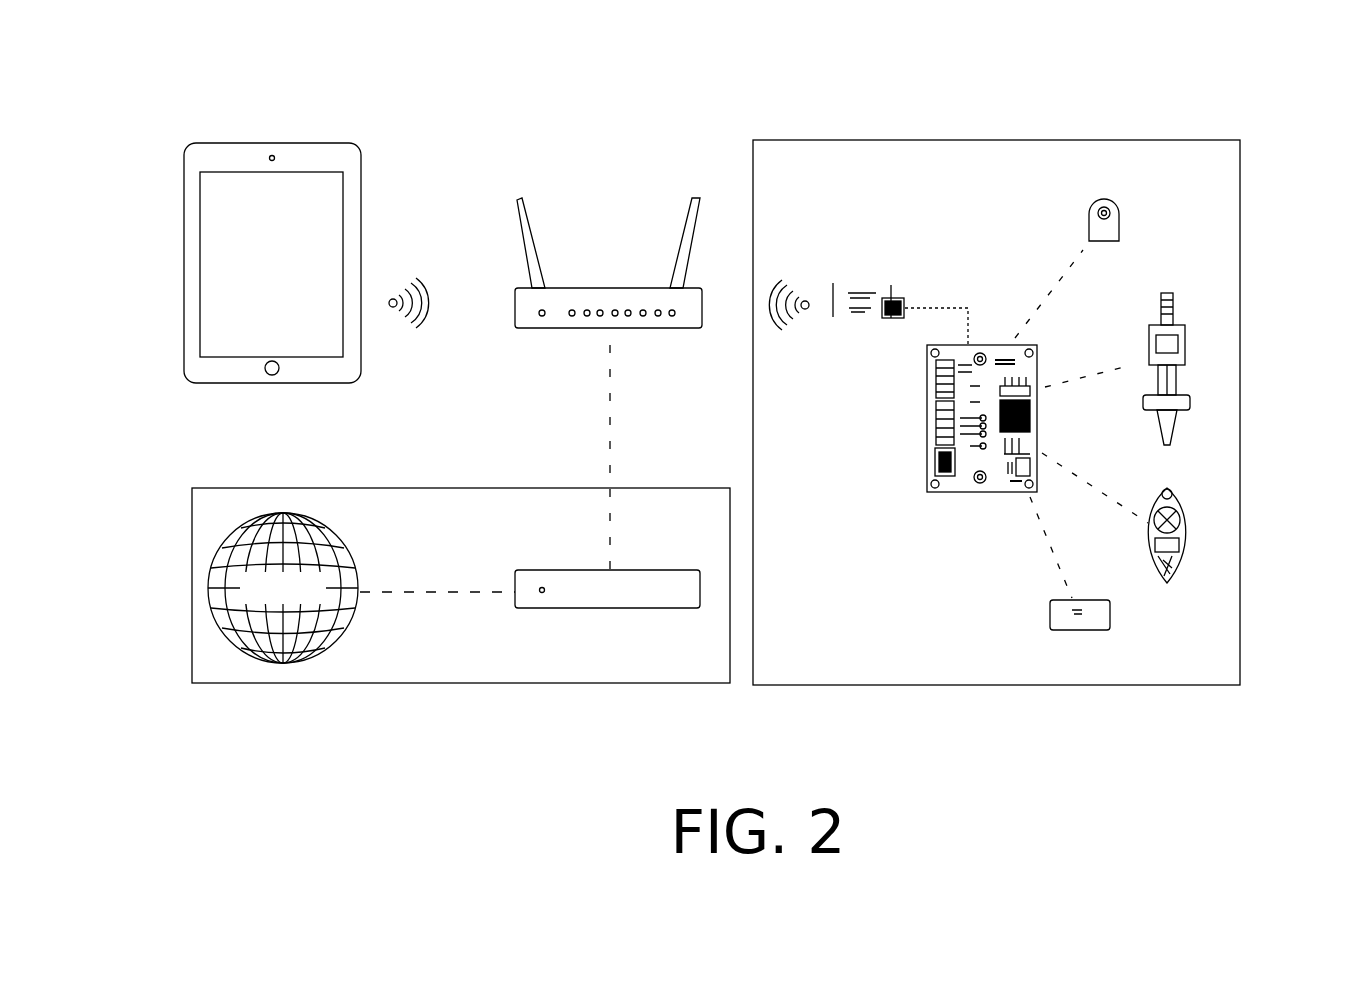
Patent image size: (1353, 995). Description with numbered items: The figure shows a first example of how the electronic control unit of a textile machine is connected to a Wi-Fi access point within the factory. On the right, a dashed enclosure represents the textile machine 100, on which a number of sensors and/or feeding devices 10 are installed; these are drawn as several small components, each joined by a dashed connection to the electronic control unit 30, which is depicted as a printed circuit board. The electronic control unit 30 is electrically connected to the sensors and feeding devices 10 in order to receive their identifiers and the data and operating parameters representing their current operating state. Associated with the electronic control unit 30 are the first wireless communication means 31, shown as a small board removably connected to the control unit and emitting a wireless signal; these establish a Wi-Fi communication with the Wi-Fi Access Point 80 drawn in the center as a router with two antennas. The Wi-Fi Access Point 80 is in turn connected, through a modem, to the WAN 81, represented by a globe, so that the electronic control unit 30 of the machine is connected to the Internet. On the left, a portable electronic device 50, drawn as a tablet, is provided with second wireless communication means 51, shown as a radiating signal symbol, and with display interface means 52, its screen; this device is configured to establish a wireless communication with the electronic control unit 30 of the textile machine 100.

The sensors and/or feeding devices 10 is at (1120, 222).
The electronic control unit 30 is at (950, 495).
The first wireless communication means 31 is at (852, 283).
The portable electronic device 50 is at (318, 141).
The second wireless communication means 51 is at (405, 278).
The display interface means 52 is at (225, 245).
The Wi-Fi Access Point 80 is at (583, 288).
The WAN 81 is at (420, 683).
The textile machine 100 is at (1043, 140).